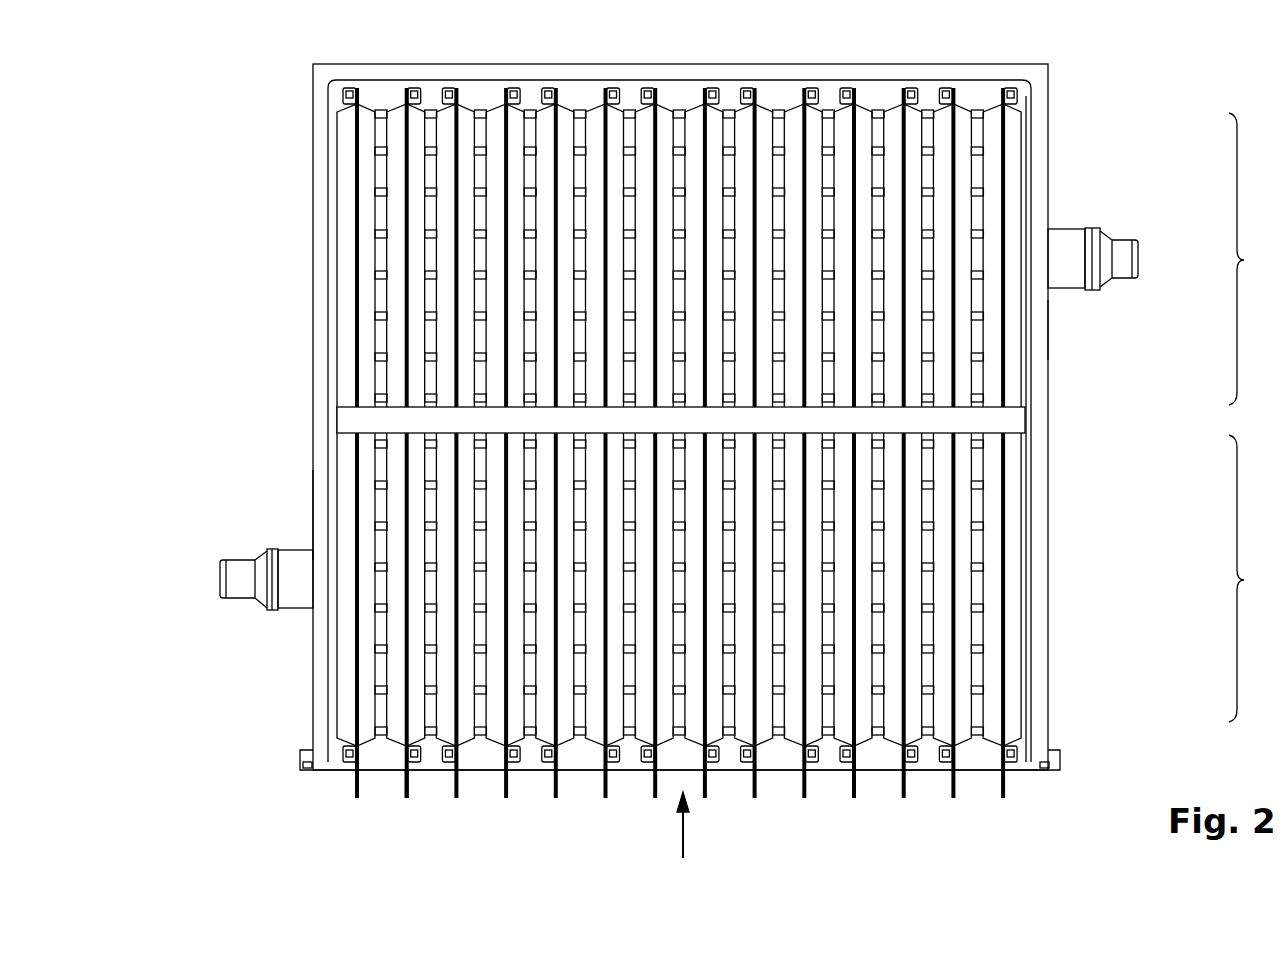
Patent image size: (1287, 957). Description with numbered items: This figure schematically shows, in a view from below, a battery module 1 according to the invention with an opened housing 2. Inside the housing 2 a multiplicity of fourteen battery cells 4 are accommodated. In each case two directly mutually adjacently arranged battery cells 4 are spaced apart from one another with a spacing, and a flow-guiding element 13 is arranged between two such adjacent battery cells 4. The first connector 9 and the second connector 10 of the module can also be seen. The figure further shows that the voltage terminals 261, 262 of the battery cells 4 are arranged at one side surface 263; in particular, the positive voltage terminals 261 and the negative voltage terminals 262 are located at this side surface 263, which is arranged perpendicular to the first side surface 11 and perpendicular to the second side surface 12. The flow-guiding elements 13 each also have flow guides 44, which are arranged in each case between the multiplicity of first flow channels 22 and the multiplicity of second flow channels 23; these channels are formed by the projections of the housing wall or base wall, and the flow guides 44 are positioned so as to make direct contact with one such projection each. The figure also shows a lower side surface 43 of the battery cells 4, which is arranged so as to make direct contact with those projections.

The battery module 1 is at (198, 705).
The housing 2 is at (1046, 377).
The battery cell 4 is at (346, 205).
The first connector 9 is at (234, 579).
The second connector 10 is at (1125, 254).
The first side surface 11 is at (313, 512).
The second side surface 12 is at (1048, 328).
The flow-guiding element 13 is at (480, 147).
The first flow channels 22 is at (1253, 578).
The second flow channels 23 is at (1253, 259).
The lower side surface 43 is at (455, 344).
The flow guide 44 is at (400, 408).
The positive voltage terminal 261 is at (357, 790).
The negative voltage terminal 262 is at (407, 790).
The side surface 263 is at (684, 840).